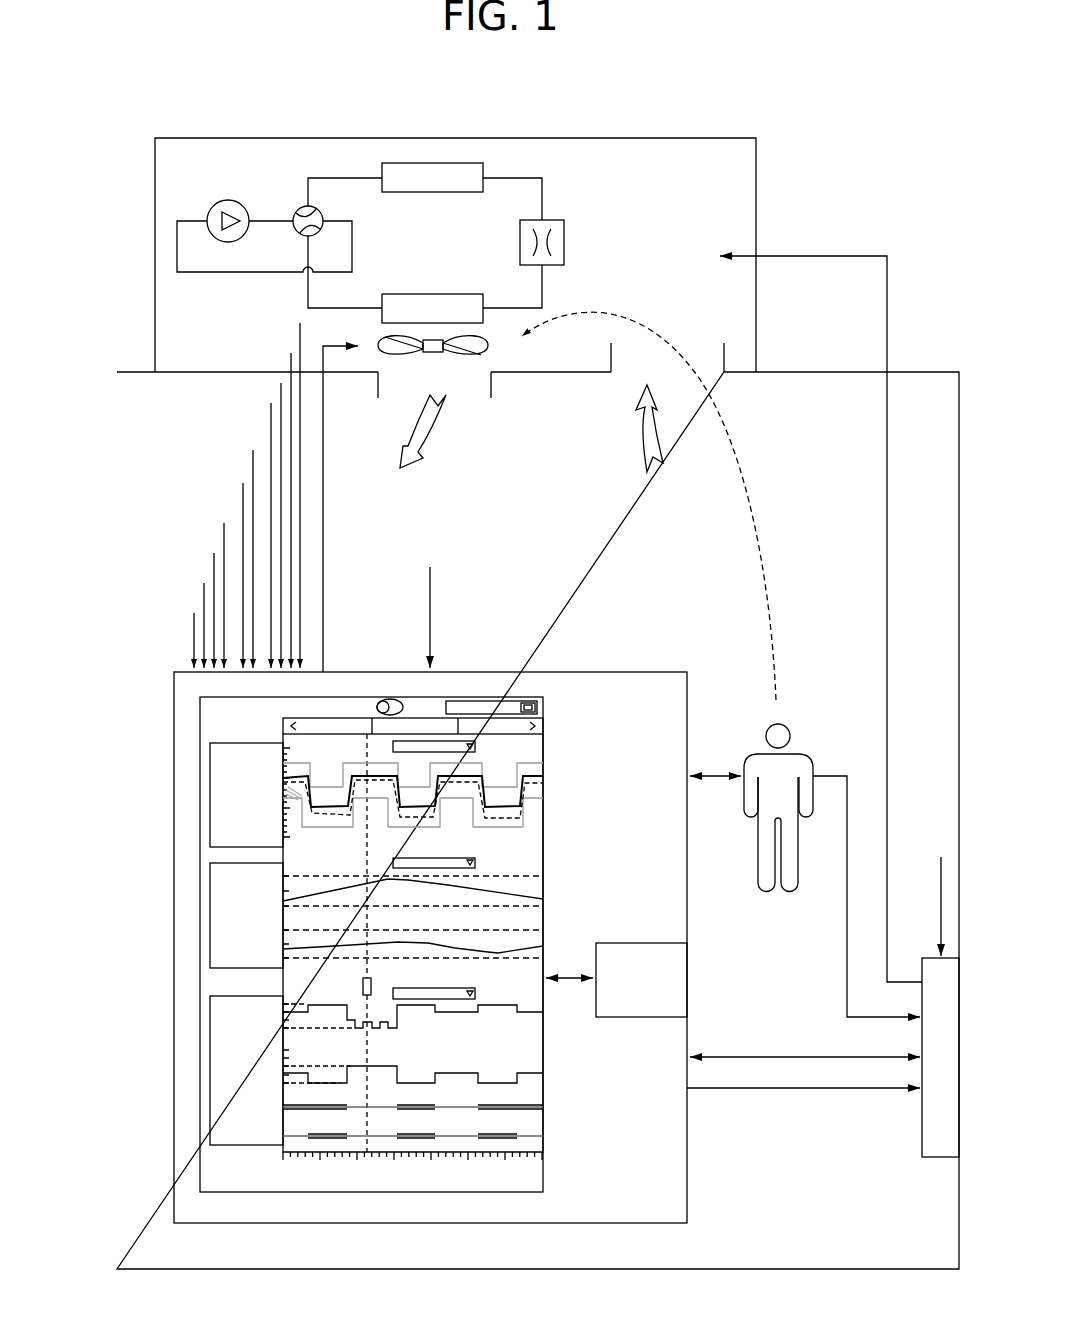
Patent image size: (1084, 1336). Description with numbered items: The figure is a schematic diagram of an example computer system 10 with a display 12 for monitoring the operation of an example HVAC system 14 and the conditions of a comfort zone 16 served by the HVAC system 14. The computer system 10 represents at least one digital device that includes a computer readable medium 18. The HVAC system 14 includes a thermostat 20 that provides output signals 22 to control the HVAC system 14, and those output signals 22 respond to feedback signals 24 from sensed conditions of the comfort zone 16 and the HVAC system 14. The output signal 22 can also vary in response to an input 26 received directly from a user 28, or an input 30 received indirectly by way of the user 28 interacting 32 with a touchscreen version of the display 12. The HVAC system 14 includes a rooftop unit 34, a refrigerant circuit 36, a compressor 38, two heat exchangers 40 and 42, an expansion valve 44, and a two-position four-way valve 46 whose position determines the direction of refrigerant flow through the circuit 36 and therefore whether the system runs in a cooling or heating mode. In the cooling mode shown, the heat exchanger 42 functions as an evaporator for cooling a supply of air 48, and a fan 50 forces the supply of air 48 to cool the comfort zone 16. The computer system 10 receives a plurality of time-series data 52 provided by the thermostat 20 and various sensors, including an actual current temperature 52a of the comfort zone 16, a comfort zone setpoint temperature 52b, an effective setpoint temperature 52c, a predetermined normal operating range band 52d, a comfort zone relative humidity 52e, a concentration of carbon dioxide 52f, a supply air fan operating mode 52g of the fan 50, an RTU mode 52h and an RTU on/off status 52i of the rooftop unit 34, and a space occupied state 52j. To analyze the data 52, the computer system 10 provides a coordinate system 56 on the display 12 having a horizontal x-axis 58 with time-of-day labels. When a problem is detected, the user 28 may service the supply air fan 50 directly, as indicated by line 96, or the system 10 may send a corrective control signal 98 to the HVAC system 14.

The computer system 10 is at (133, 890).
The display 12 is at (430, 910).
The HVAC system 14 is at (497, 205).
The comfort zone 16 is at (561, 557).
The computer readable medium 18 is at (640, 943).
The thermostat 20 is at (921, 1135).
The output signals 22 is at (887, 540).
The feedback signals 24 is at (430, 611).
The input 26 is at (845, 953).
The user 28 is at (808, 757).
The input 30 is at (757, 1093).
The interacting 32 is at (757, 1052).
The rooftop unit 34 is at (224, 138).
The refrigerant circuit 36 is at (545, 195).
The compressor 38 is at (226, 200).
The heat exchanger 40 is at (440, 193).
The heat exchanger 42 is at (413, 293).
The expansion valve 44 is at (566, 245).
The 2-position 4-way valve 46 is at (298, 210).
The supply of air 48 is at (440, 425).
The fan 50 is at (400, 353).
The time-series data 52 is at (177, 497).
The actual current temperature 52a is at (300, 327).
The comfort zone setpoint temperature 52b is at (291, 360).
The effective setpoint temperature 52c is at (281, 390).
The predetermined normal operating range band 52d is at (271, 416).
The comfort zone relative humidity 52e is at (253, 462).
The concentration of carbon dioxide 52f is at (243, 490).
The supply air fan operating mode 52g is at (224, 536).
The RTU mode 52h is at (214, 565).
The RTU on/off status 52i is at (204, 595).
The space occupied state 52j is at (194, 625).
The coordinate system 56 is at (280, 1151).
The x-axis 58 is at (503, 1156).
The line 96 is at (743, 505).
The corrective control signal 98 is at (323, 482).